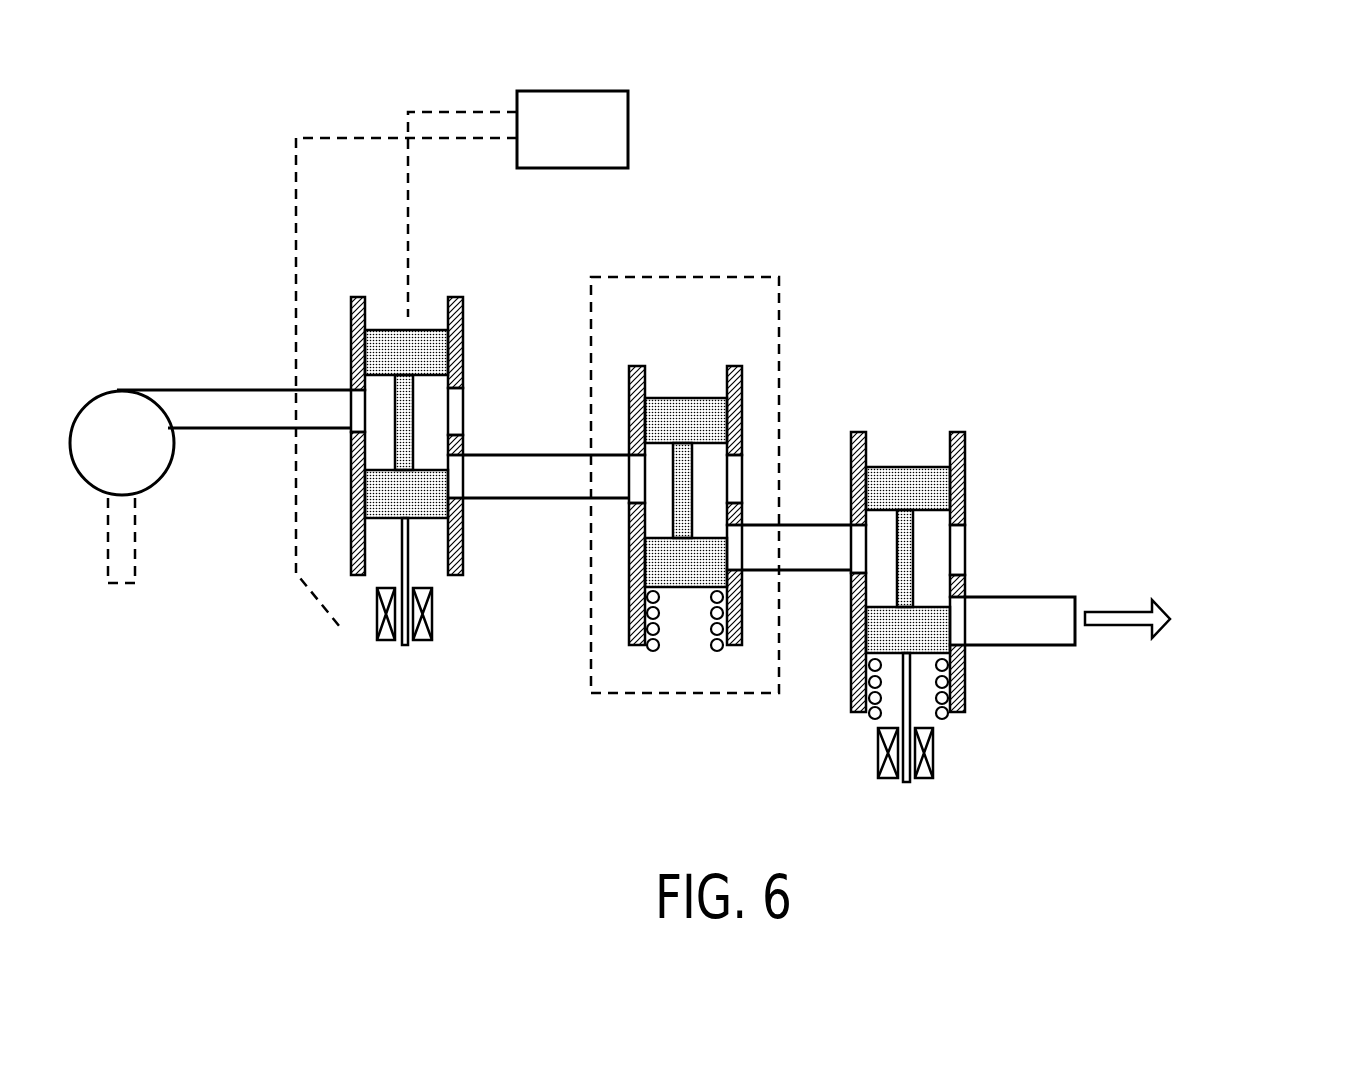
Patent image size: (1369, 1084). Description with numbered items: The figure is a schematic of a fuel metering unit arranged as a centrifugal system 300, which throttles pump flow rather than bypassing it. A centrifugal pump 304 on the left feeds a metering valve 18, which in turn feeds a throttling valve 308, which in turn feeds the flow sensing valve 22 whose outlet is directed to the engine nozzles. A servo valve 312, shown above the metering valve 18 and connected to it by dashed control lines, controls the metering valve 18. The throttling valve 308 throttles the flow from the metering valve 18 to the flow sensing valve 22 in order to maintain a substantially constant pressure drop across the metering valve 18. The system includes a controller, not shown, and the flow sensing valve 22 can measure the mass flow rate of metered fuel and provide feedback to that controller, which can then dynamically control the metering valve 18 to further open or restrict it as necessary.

The centrifugal pump 304 is at (95, 400).
The servo valve 312 is at (628, 132).
The centrifugal system 300 is at (823, 275).
The metering valve 18 is at (458, 575).
The throttling valve 308 is at (710, 693).
The flow sensing valve 22 is at (965, 462).